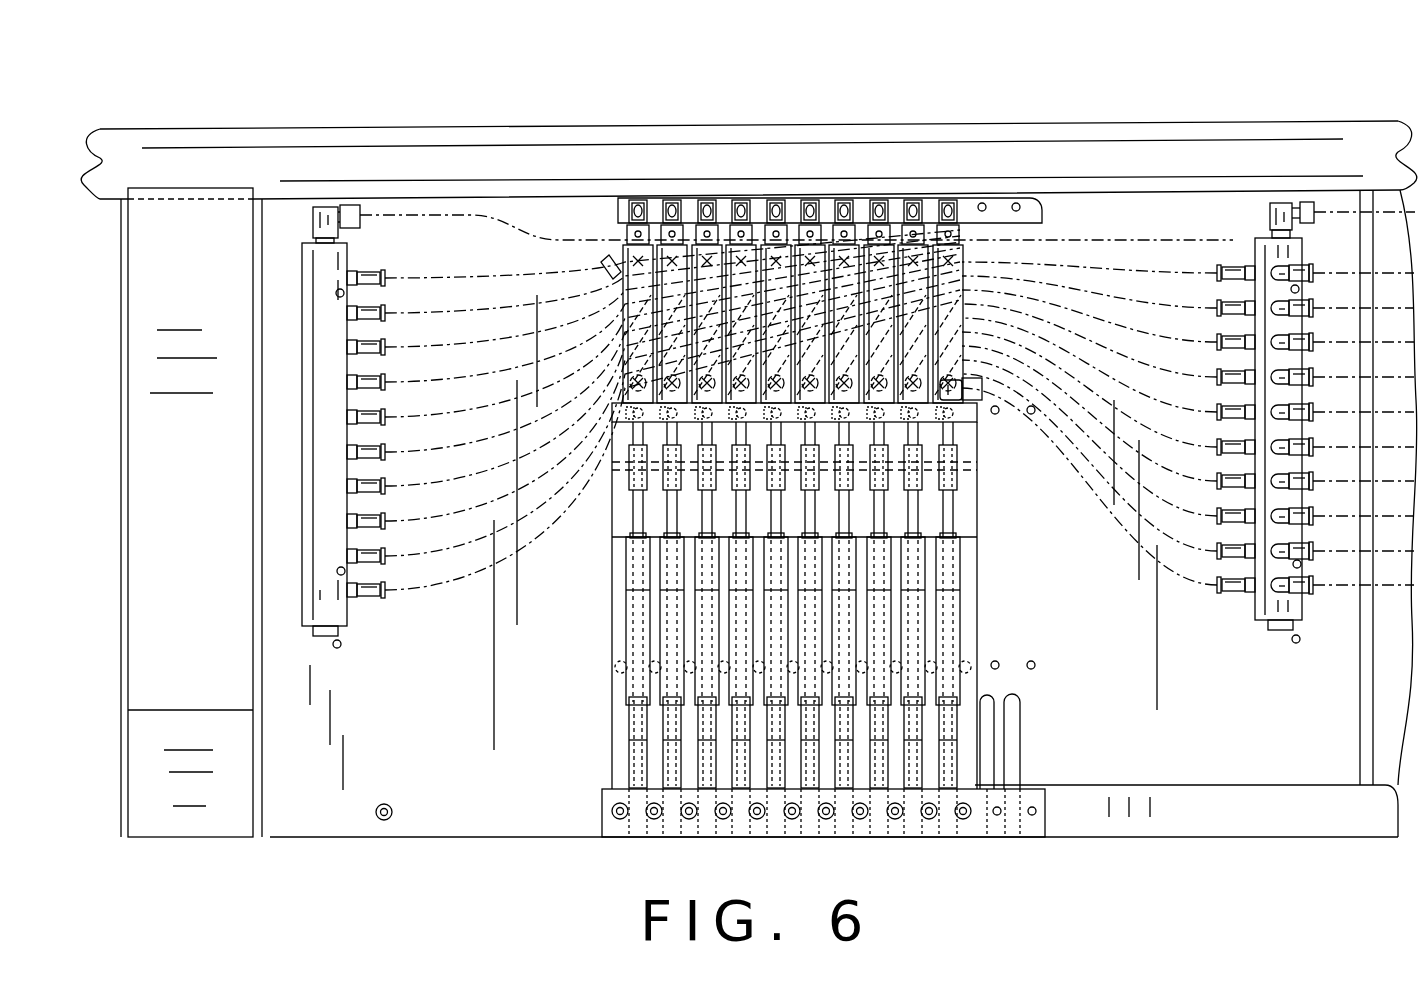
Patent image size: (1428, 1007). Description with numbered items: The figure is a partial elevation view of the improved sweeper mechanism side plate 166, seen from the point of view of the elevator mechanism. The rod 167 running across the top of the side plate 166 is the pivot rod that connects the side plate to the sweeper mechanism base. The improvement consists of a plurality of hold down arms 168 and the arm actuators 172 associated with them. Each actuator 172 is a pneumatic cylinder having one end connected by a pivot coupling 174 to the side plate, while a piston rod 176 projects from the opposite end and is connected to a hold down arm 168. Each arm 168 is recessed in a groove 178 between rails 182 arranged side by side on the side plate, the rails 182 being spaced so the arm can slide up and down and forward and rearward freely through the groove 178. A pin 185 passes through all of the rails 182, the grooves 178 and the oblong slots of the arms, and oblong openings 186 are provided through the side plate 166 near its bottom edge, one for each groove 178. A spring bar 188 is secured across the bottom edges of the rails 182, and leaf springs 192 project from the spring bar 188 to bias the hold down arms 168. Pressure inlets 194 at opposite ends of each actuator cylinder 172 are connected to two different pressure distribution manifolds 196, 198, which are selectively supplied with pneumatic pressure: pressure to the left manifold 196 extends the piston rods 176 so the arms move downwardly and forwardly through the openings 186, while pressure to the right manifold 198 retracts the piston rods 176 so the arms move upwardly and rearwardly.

The side plate 166 is at (1295, 752).
The rod 167 is at (1360, 143).
The hold down arm 168 is at (953, 505).
The arm actuator 172 is at (960, 228).
The pivot coupling 174 is at (982, 202).
The piston rod 176 is at (956, 440).
The groove 178 is at (970, 598).
The rail 182 is at (975, 623).
The pin 185 is at (606, 468).
The oblong opening 186 is at (1014, 758).
The spring bar 188 is at (1083, 812).
The leaf spring 192 is at (618, 650).
The pressure inlet 194 is at (612, 258).
The pressure distribution manifold 196 is at (320, 272).
The pressure distribution manifold 198 is at (1277, 257).